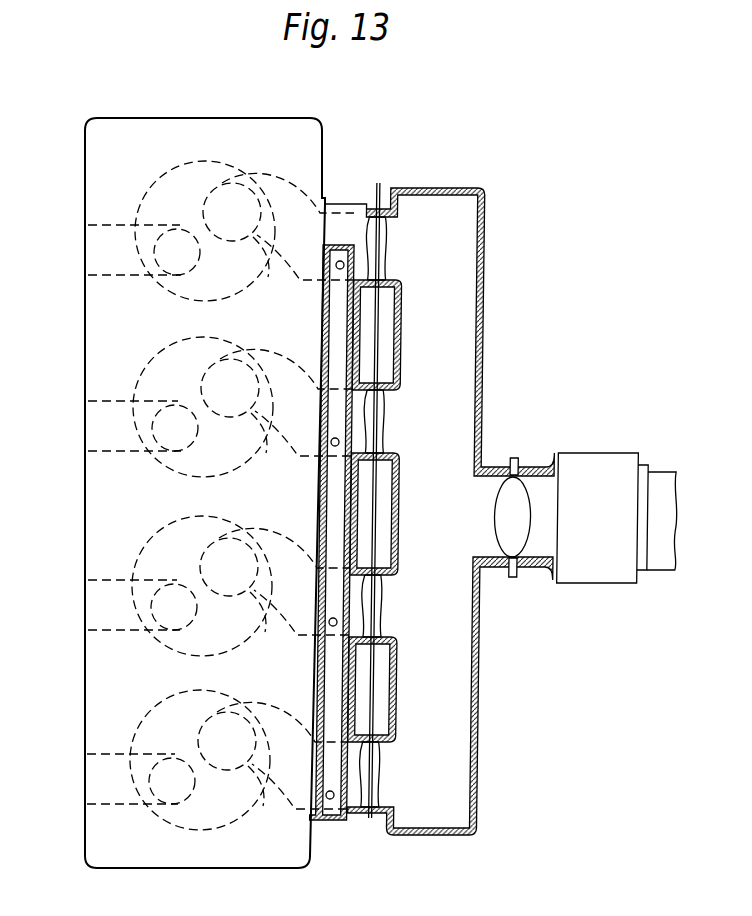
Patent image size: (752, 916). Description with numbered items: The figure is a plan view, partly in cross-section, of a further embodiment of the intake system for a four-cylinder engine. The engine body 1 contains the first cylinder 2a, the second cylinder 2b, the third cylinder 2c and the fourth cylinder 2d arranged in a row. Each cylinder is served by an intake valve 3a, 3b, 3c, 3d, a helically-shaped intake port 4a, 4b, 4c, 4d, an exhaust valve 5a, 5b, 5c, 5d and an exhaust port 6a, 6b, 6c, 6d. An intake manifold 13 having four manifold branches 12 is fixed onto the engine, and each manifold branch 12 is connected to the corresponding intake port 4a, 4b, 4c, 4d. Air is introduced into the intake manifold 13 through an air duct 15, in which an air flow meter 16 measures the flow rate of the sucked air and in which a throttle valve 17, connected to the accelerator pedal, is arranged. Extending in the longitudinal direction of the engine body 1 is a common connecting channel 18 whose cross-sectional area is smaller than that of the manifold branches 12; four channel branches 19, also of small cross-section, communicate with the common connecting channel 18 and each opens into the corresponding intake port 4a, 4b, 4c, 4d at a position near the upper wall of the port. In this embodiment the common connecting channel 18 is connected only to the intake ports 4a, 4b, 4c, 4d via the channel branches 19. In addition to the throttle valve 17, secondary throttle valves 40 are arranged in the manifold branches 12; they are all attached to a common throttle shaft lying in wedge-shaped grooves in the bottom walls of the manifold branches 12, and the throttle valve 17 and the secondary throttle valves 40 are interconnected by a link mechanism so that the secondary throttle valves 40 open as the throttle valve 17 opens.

The engine body 1 is at (88, 122).
The No. 1 cylinder 2a is at (143, 205).
The No. 2 cylinder 2b is at (141, 381).
The No. 3 cylinder 2c is at (140, 560).
The No. 4 cylinder 2d is at (138, 734).
The intake valve 3a is at (258, 248).
The intake valve 3b is at (256, 424).
The intake valve 3c is at (255, 603).
The intake valve 3d is at (253, 777).
The helically-shaped intake port 4a is at (272, 178).
The helically-shaped intake port 4b is at (270, 354).
The helically-shaped intake port 4c is at (269, 533).
The helically-shaped intake port 4d is at (267, 707).
The exhaust valve 5a is at (177, 277).
The exhaust valve 5b is at (175, 453).
The exhaust valve 5c is at (174, 632).
The exhaust valve 5d is at (172, 806).
The exhaust port 6a is at (132, 276).
The exhaust port 6b is at (130, 452).
The exhaust port 6c is at (129, 631).
The exhaust port 6d is at (127, 805).
The manifold branch 12 is at (348, 212).
The intake manifold 13 is at (485, 250).
The air duct 15 is at (541, 468).
The air flow meter 16 is at (604, 460).
The throttle valve 17 is at (510, 497).
The common connecting channel 18 is at (338, 333).
The channel branch 19 is at (336, 264).
The secondary throttle valve 40 is at (387, 249).